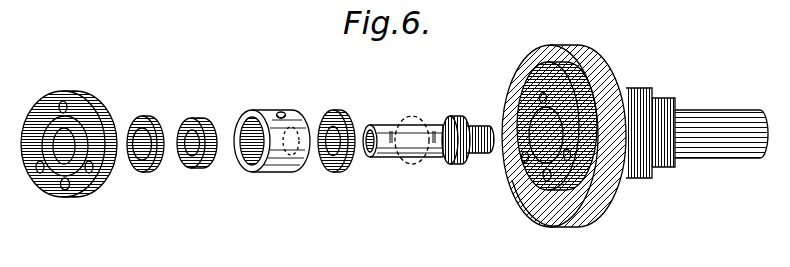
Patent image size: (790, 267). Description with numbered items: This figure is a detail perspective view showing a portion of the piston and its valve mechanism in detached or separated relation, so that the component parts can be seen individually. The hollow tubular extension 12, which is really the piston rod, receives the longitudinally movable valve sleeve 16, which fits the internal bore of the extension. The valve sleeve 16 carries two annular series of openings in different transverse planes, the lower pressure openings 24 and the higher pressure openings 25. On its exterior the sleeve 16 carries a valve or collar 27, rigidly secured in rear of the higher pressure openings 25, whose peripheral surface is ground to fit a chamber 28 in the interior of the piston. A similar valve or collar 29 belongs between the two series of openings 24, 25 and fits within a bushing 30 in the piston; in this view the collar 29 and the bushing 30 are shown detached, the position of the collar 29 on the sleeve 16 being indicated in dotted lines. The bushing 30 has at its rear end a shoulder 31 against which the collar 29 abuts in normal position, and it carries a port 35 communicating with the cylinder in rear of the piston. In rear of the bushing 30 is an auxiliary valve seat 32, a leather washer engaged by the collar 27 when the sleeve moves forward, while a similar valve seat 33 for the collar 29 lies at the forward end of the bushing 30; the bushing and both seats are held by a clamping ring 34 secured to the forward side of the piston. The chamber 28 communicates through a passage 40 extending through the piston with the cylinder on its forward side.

The tubular extension 12 is at (700, 117).
The valve sleeve 16 is at (478, 127).
The lower pressure openings 24 is at (393, 126).
The higher pressure openings 25 is at (432, 124).
The valve or collar 27 is at (460, 116).
The chamber 28 is at (531, 118).
The valve or collar 29 is at (204, 118).
The bushing 30 is at (261, 112).
The shoulder 31 is at (298, 127).
The auxiliary valve seat 32 is at (339, 111).
The valve seat 33 is at (148, 117).
The clamping ring 34 is at (87, 104).
The port 35 is at (283, 113).
The passage 40 is at (65, 191).